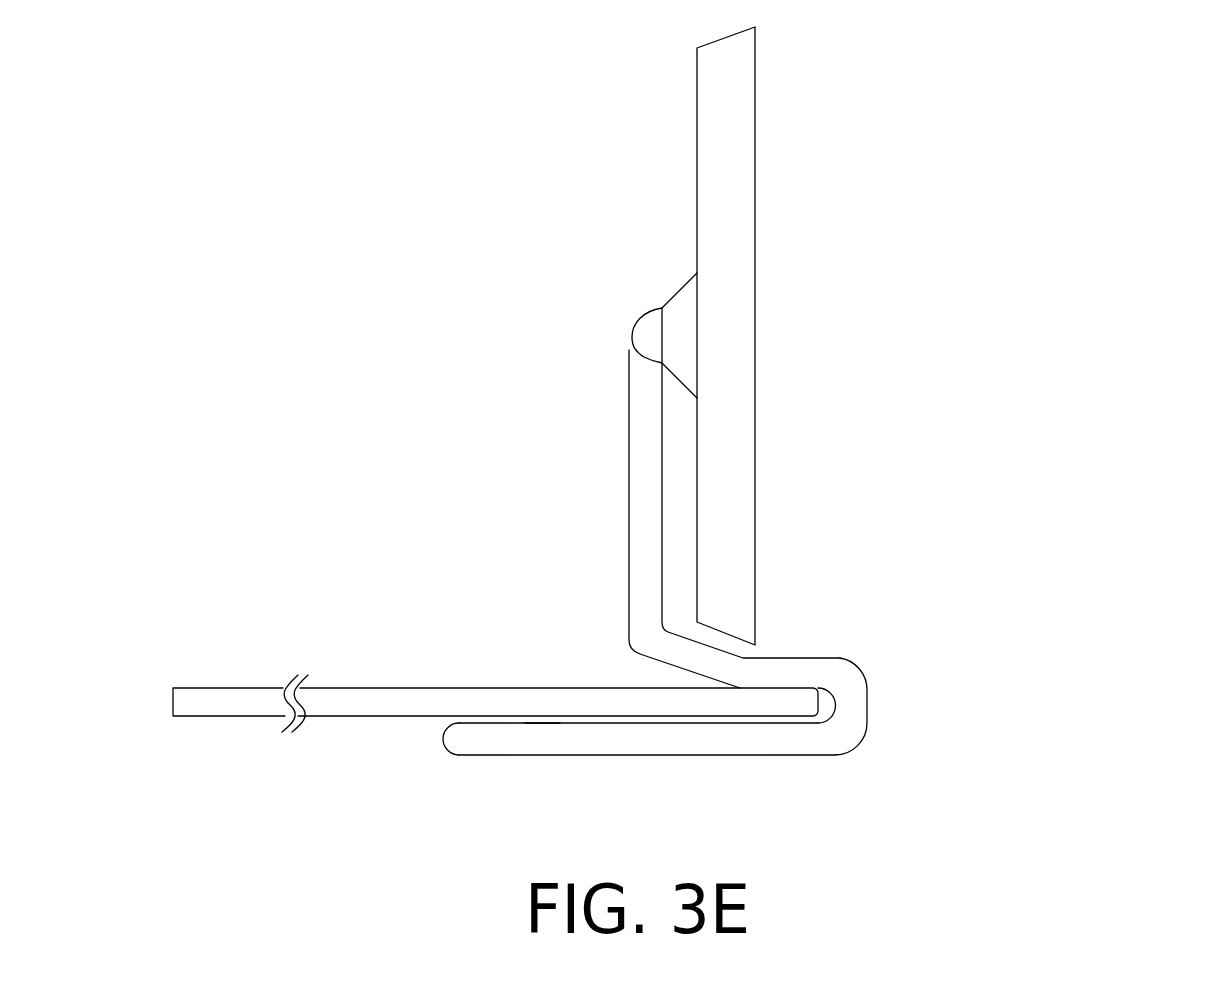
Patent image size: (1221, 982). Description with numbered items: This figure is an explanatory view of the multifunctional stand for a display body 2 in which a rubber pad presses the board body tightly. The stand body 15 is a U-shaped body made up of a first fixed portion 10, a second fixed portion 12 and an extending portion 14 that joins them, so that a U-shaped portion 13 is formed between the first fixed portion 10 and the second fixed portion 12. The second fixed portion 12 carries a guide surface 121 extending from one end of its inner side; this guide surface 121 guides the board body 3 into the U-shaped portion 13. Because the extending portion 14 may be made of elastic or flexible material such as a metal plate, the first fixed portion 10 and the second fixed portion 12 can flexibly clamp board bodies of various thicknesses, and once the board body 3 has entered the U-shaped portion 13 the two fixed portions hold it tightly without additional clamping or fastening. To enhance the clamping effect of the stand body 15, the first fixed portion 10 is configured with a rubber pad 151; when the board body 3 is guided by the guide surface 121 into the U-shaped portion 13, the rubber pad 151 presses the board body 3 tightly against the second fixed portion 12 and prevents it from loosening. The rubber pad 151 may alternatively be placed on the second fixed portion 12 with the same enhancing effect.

The display body 2 is at (755, 335).
The board body 3 is at (212, 688).
The first fixed portion 10 is at (480, 756).
The second fixed portion 12 is at (773, 657).
The guide surface 121 is at (683, 638).
The U-shaped portion 13 is at (834, 720).
The extending portion 14 is at (850, 692).
The stand body 15 is at (938, 706).
The rubber pad 151 is at (550, 718).